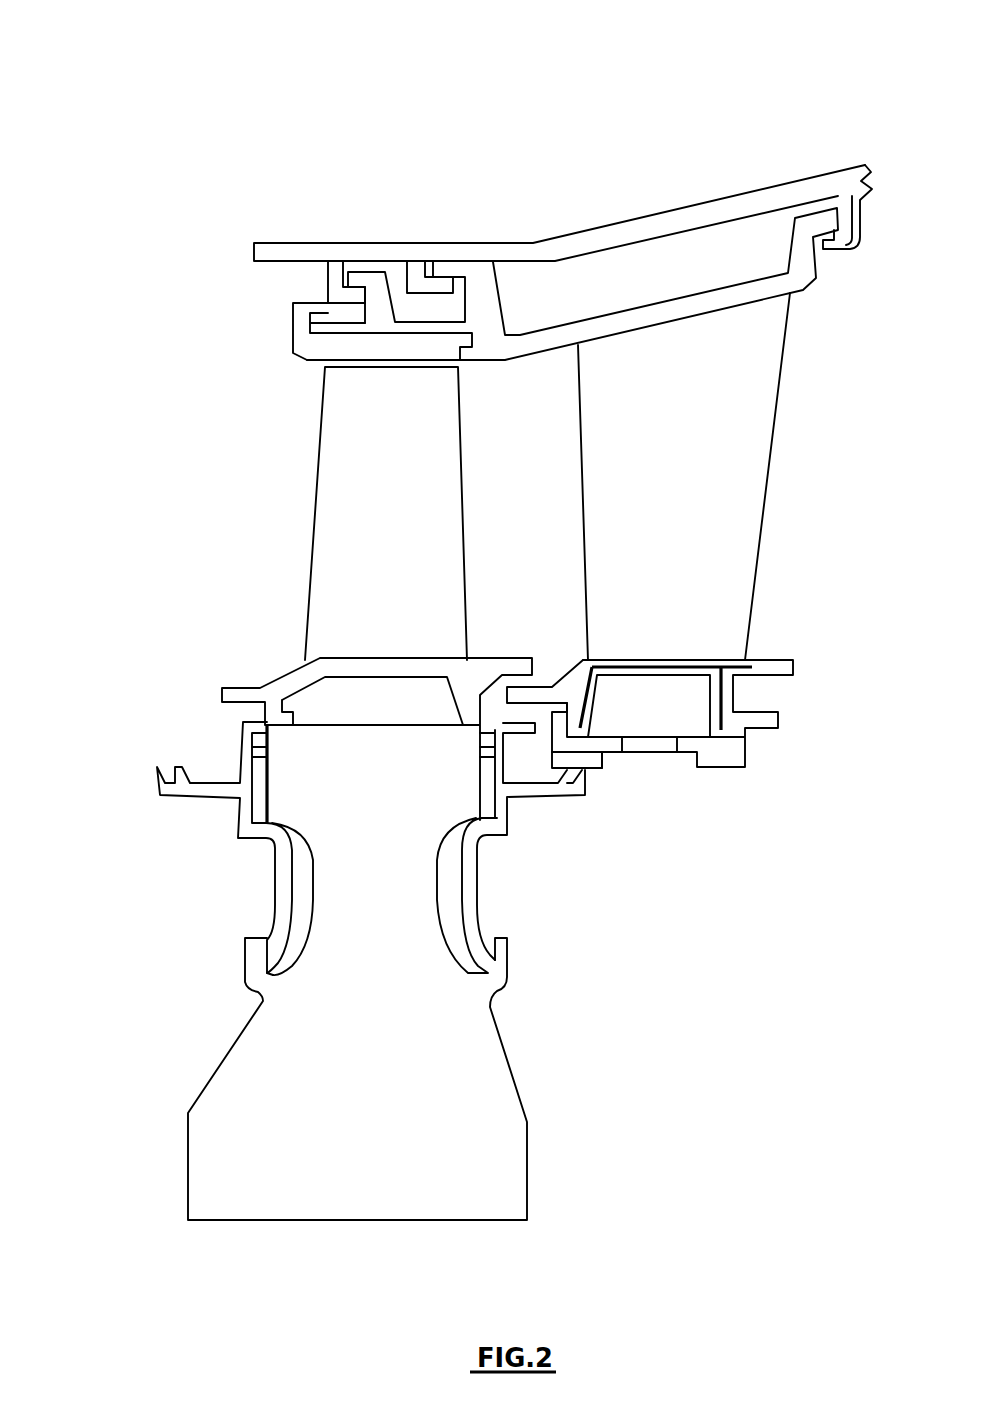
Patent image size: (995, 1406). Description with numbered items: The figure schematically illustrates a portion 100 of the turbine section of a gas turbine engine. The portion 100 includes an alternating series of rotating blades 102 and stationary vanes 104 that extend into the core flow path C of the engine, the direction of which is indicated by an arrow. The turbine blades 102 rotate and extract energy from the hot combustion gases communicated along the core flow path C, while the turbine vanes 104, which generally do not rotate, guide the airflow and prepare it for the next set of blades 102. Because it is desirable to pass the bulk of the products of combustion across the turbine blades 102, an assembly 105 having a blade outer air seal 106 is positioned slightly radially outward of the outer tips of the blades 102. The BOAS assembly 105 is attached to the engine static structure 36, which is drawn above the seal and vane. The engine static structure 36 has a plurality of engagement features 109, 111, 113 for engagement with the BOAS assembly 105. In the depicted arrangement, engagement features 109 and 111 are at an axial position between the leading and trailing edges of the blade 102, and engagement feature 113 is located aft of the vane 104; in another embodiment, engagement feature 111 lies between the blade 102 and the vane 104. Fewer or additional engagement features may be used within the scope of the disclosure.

The portion of the turbine section 100 is at (765, 75).
The engine static structure 36 is at (563, 247).
The engagement feature 113 is at (852, 197).
The engagement feature 109 is at (336, 270).
The engagement feature 111 is at (417, 267).
The blade outer air seal assembly 105 is at (272, 313).
The blade outer air seal 106 is at (303, 360).
The rotating blade 102 is at (343, 423).
The stationary vane 104 is at (607, 452).
The core flow path C is at (195, 523).